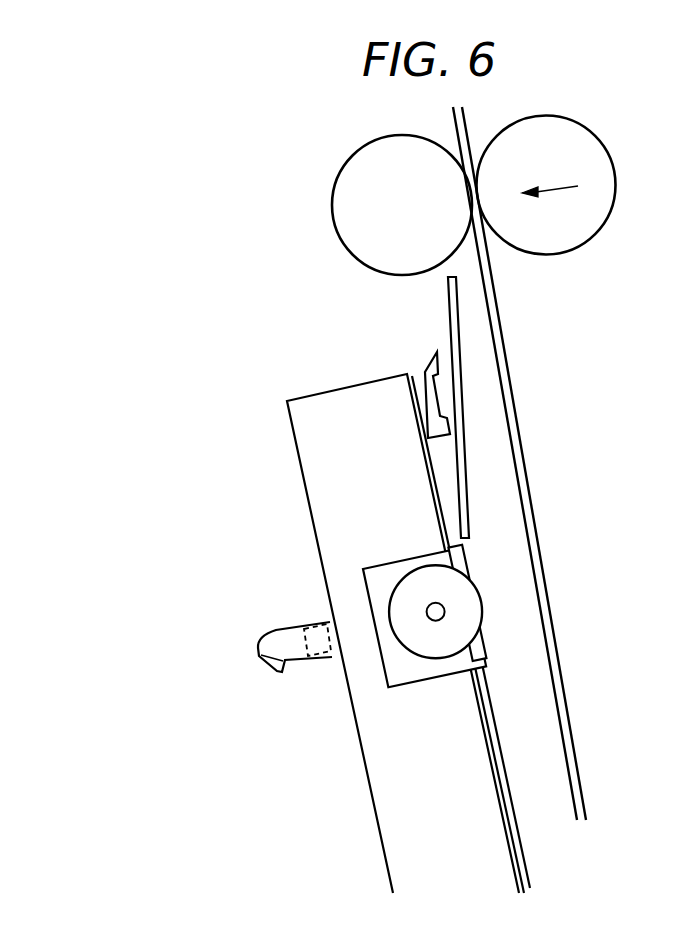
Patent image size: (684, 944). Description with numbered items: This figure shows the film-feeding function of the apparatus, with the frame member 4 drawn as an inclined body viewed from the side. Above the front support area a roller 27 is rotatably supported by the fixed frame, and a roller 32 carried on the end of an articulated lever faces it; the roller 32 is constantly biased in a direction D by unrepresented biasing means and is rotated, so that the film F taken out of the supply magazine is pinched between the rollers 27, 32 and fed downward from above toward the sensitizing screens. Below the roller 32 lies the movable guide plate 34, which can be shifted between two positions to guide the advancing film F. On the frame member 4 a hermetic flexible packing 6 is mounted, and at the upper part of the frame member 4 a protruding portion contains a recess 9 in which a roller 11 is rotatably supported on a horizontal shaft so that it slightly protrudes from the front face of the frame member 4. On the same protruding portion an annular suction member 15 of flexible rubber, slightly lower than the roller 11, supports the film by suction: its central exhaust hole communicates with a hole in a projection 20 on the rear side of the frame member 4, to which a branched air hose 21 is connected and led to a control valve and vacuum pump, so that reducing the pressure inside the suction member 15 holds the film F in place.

The frame member 4 is at (307, 433).
The hermetic flexible packing 6 is at (425, 370).
The recess 9 is at (380, 578).
The roller 11 is at (434, 653).
The annular suction member 15 is at (469, 558).
The projection 20 is at (305, 622).
The branched air hose 21 is at (286, 675).
The roller 27 is at (353, 231).
The roller 32 is at (613, 163).
The movable guide plate 34 is at (448, 325).
The film F is at (520, 425).
The biasing direction D is at (550, 175).